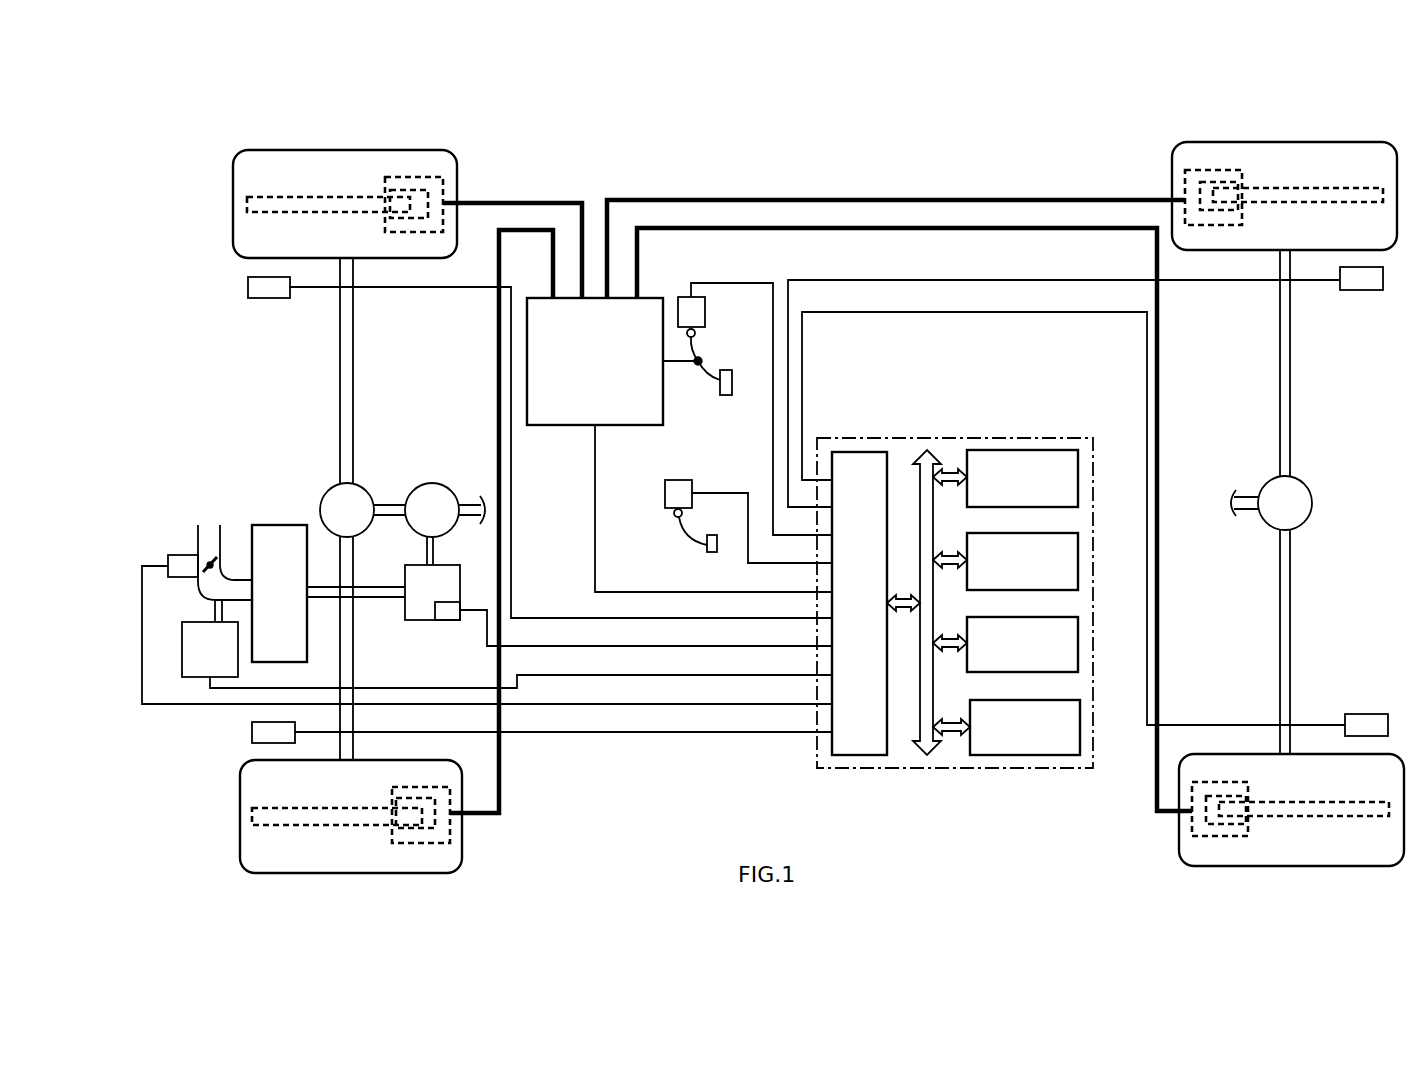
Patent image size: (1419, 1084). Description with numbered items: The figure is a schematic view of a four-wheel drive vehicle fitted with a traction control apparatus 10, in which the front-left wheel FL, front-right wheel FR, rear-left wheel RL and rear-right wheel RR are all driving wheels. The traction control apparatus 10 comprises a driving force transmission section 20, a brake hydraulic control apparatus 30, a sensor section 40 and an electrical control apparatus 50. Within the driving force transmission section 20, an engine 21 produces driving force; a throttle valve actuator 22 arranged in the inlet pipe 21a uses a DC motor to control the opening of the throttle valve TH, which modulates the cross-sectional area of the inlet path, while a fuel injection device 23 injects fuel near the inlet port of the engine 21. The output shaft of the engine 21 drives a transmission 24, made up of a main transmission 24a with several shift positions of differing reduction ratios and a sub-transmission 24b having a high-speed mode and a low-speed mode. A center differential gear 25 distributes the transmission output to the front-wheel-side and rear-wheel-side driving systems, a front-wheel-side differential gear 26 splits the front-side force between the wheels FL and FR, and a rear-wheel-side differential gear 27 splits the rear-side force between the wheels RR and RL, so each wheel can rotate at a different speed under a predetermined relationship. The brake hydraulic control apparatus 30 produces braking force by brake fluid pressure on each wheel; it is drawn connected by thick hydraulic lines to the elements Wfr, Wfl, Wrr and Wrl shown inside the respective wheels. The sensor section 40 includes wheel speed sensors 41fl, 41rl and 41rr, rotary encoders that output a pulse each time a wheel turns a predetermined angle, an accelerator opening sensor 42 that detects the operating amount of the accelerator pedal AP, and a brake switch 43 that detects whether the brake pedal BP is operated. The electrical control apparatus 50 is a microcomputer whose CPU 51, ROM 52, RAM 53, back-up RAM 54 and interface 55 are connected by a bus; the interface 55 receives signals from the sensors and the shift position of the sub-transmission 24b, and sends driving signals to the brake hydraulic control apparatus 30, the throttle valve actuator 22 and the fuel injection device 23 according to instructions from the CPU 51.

The traction control apparatus 10 is at (855, 172).
The driving force transmission section 20 is at (193, 468).
The engine 21 is at (279, 525).
The inlet pipe 21a is at (198, 545).
The throttle valve TH is at (212, 560).
The throttle valve actuator 22 is at (180, 577).
The fuel injection device 23 is at (238, 670).
The transmission 24 is at (410, 620).
The main transmission 24a is at (452, 620).
The sub-transmission 24b is at (460, 583).
The center differential gear 25 is at (433, 483).
The front-wheel-side differential gear 26 is at (357, 485).
The rear-wheel-side differential gear 27 is at (1310, 490).
The brake hydraulic control apparatus 30 is at (663, 408).
The sensor section 40 is at (661, 537).
The wheel speed sensor 41fl is at (262, 298).
The wheel speed sensor 41rr is at (1363, 290).
The wheel speed sensor 41rl is at (1370, 714).
The accelerator opening sensor 42 is at (665, 493).
The brake switch 43 is at (705, 312).
The accelerator pedal AP is at (692, 535).
The brake pedal BP is at (702, 362).
The electrical control apparatus 50 is at (975, 617).
The CPU 51 is at (1078, 478).
The ROM 52 is at (1078, 561).
The RAM 53 is at (1078, 645).
The back-up RAM 54 is at (1080, 728).
The interface 55 is at (860, 755).
The front-right wheel FR is at (292, 150).
The front-left wheel FL is at (428, 760).
The rear-right wheel RR is at (1302, 142).
The rear-left wheel RL is at (1318, 866).
The front-right wheel cylinder Wfr is at (402, 177).
The front-left wheel cylinder Wfl is at (450, 830).
The rear-right wheel cylinder Wrr is at (1207, 170).
The rear-left wheel cylinder Wrl is at (1208, 836).